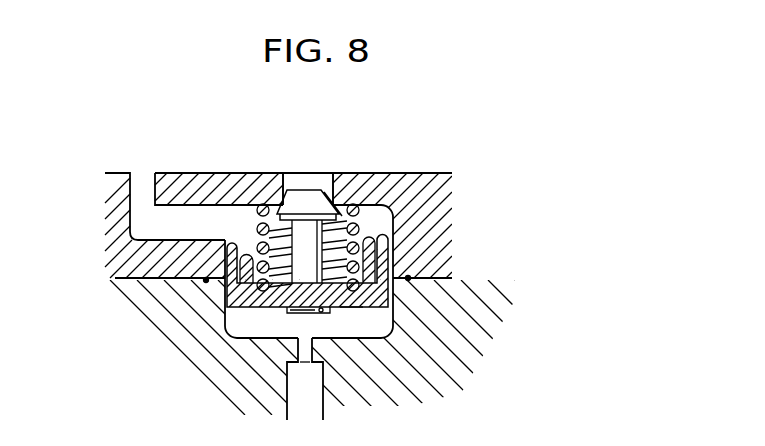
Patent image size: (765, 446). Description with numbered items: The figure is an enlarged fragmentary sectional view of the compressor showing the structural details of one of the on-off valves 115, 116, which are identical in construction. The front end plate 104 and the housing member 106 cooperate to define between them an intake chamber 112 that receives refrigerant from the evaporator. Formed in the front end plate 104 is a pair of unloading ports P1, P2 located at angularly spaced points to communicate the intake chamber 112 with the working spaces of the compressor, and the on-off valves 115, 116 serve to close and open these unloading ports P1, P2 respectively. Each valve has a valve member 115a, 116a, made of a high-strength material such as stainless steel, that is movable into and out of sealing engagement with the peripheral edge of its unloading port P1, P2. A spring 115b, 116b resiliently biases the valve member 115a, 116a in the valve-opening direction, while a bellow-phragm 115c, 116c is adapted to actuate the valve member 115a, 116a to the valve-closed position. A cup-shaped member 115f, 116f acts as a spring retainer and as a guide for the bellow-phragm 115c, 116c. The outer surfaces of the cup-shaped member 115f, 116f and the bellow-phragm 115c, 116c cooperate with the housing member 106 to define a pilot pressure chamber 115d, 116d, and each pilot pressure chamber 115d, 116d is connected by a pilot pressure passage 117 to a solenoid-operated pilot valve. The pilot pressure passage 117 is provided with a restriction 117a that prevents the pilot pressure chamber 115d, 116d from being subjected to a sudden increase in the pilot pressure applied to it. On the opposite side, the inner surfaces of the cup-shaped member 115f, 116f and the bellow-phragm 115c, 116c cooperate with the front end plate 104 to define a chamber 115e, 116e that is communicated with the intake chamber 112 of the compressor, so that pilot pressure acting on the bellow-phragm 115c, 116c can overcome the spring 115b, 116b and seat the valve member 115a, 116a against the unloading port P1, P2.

The front end plate 104 is at (448, 244).
The housing member 106 is at (443, 293).
The intake chamber 112 is at (171, 204).
The on-off valve 115 is at (302, 260).
The on-off valve 116 is at (302, 260).
The valve member 115a is at (375, 157).
The valve member 116a is at (334, 174).
The spring 115b is at (293, 200).
The spring 116b is at (263, 203).
The bellow-phragm 115c is at (234, 300).
The bellow-phragm 116c is at (241, 290).
The pilot pressure chamber 115d is at (256, 359).
The pilot pressure chamber 116d is at (272, 326).
The chamber 115e is at (362, 226).
The chamber 116e is at (349, 204).
The cup-shaped member 115f is at (425, 340).
The cup-shaped member 116f is at (360, 306).
The unloading port P1 is at (326, 205).
The unloading port P2 is at (302, 259).
The pilot pressure passage 117 is at (352, 387).
The restriction 117a is at (307, 348).